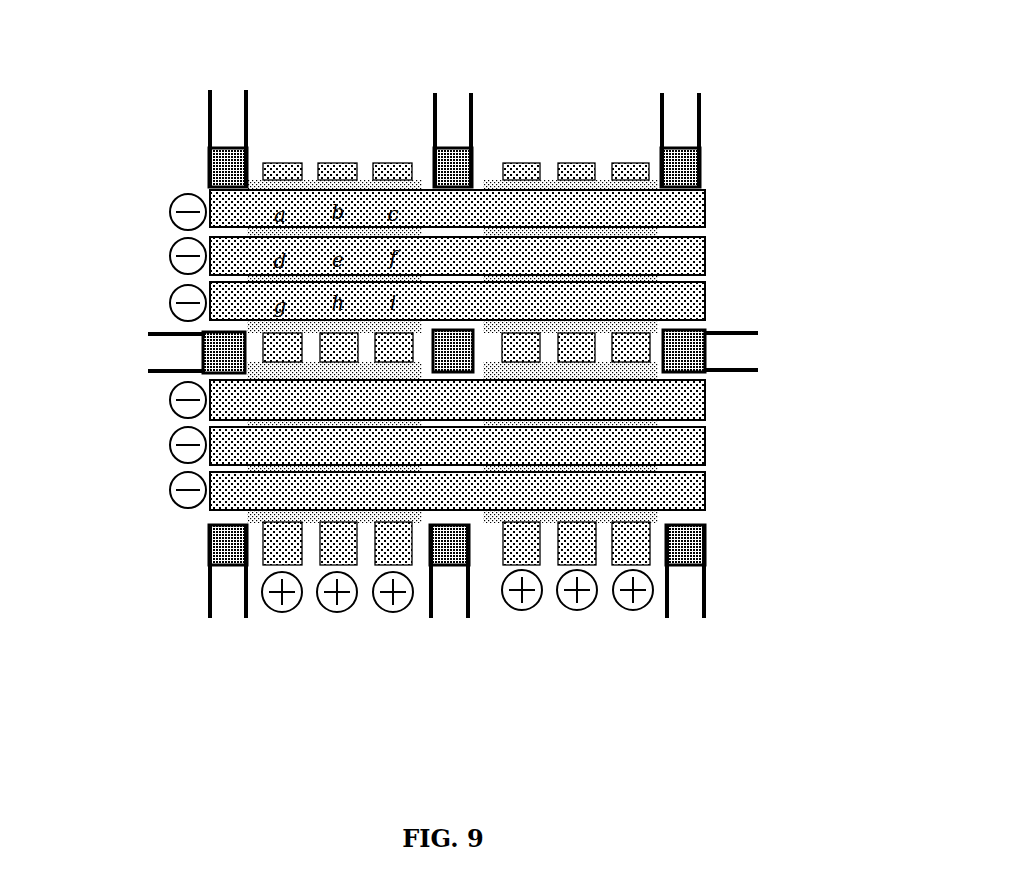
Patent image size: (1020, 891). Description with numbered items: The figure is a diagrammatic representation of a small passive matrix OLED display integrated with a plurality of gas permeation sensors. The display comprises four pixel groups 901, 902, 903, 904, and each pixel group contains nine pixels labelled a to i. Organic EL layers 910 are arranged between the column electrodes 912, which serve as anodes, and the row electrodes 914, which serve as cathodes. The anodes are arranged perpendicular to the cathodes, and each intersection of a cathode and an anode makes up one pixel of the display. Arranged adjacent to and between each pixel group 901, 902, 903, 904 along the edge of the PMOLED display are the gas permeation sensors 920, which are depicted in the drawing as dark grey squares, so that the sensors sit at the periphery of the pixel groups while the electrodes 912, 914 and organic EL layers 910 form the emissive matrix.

The pixel group 901 is at (412, 142).
The pixel group 902 is at (650, 142).
The pixel group 903 is at (138, 385).
The pixel group 904 is at (742, 387).
The organic EL layer 910 is at (642, 324).
The column electrode 912 is at (221, 221).
The row electrode 914 is at (391, 552).
The gas permeation sensor 920 is at (453, 148).